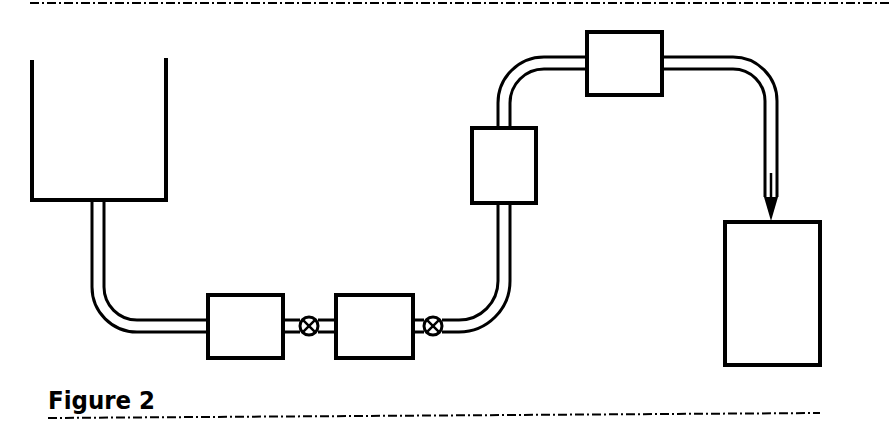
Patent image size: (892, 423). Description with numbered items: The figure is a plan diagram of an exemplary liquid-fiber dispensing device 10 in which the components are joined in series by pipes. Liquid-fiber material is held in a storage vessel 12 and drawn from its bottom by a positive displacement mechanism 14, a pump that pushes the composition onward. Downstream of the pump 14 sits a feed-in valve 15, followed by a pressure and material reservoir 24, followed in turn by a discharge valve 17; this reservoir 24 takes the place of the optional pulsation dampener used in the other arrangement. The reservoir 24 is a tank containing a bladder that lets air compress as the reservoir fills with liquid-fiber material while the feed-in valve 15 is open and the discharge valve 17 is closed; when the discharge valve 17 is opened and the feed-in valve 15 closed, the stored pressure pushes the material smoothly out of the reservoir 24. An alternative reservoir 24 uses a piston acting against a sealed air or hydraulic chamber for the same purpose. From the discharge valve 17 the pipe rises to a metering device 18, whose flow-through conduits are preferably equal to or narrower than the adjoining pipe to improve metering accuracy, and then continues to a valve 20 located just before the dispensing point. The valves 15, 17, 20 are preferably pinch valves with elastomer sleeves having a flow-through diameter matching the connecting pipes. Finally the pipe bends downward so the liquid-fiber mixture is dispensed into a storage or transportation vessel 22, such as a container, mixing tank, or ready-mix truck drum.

The liquid-fiber dispensing device 10 is at (294, 115).
The storage vessel 12 is at (99, 129).
The positive displacement mechanism 14 is at (245, 326).
The feed-in valve 15 is at (312, 309).
The discharge valve 17 is at (437, 309).
The metering device 18 is at (504, 165).
The valve 20 is at (624, 63).
The storage or transportation vessel 22 is at (772, 293).
The pressure and material reservoir 24 is at (374, 326).